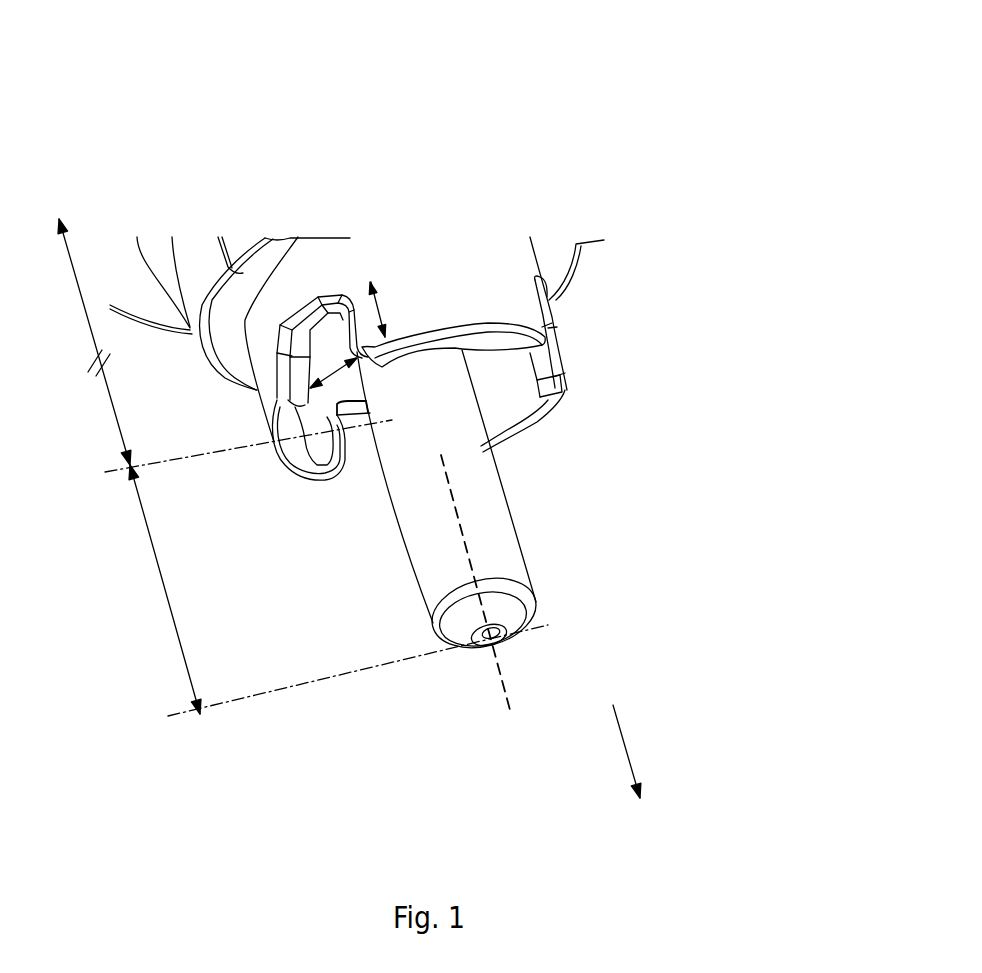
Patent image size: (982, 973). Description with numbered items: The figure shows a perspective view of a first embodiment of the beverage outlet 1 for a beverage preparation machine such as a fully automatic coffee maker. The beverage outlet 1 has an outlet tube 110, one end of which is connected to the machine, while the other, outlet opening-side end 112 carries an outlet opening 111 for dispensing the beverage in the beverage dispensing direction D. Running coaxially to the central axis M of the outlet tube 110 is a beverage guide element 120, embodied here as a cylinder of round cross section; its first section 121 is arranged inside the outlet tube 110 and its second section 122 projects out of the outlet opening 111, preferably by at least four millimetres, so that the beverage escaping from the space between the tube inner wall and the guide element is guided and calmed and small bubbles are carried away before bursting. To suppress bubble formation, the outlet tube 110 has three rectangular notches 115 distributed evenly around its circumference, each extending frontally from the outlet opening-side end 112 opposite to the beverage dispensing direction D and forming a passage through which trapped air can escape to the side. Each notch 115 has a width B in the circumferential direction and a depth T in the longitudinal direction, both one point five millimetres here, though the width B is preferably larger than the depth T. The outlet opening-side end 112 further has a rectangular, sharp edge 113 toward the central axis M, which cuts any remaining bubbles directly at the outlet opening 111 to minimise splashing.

The beverage outlet 1 is at (490, 172).
The outlet tube 110 is at (455, 298).
The outlet opening 111 is at (490, 397).
The outlet opening-side end 112 is at (548, 401).
The edge 113 is at (529, 415).
The notches 115 is at (334, 388).
The beverage guide element 120 is at (433, 525).
The first section 121 is at (211, 345).
The second section 122 is at (332, 590).
The depth T is at (388, 309).
The width B is at (333, 361).
The beverage dispensing direction D is at (636, 750).
The central axis M is at (500, 667).